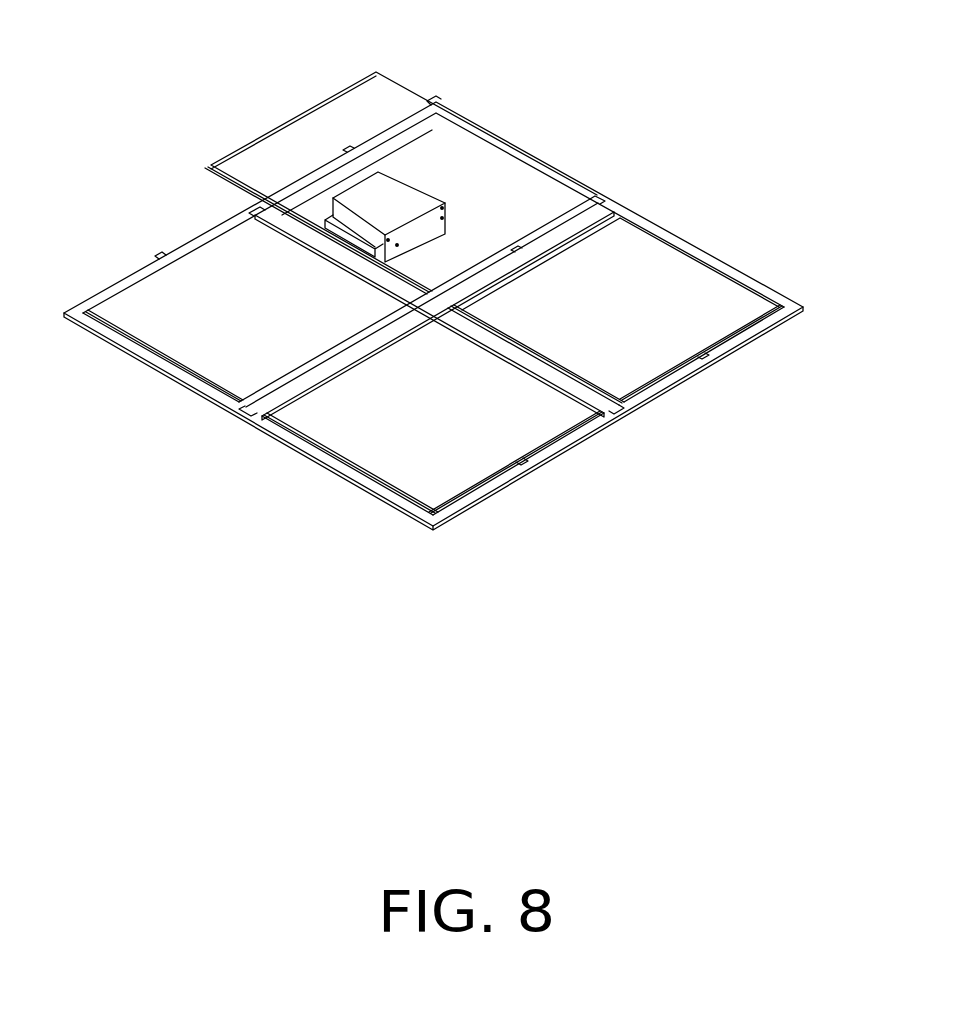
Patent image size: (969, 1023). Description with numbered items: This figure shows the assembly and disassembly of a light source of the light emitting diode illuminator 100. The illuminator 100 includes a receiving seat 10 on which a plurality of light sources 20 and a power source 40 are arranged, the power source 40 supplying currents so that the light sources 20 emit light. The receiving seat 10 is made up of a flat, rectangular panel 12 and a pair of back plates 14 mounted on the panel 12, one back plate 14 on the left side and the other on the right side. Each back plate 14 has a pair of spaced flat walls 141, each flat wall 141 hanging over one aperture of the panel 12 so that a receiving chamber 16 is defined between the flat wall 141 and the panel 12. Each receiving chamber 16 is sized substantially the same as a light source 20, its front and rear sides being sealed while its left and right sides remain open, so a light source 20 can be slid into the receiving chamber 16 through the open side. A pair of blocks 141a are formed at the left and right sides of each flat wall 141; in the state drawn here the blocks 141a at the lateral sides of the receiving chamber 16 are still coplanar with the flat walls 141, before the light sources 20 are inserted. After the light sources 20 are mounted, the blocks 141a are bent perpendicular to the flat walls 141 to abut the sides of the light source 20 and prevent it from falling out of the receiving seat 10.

The light emitting diode illuminator 100 is at (481, 313).
The receiving seat 10 is at (481, 314).
The panel 12 is at (765, 330).
The back plate 14 is at (565, 158).
The flat wall 141 is at (410, 111).
The block 141a is at (350, 147).
The receiving chamber 16 is at (479, 490).
The light source 20 is at (322, 135).
The power source 40 is at (377, 190).